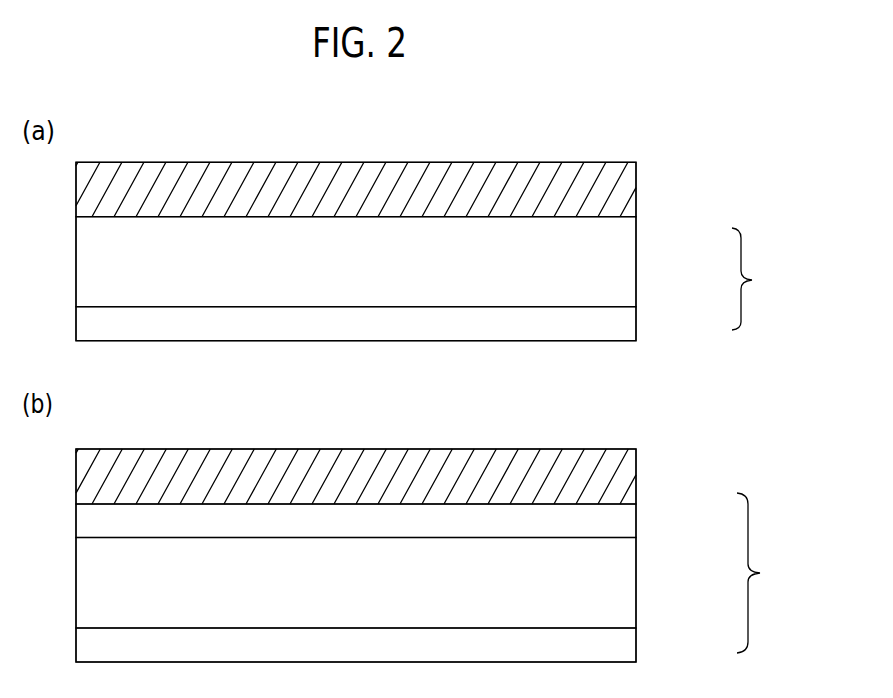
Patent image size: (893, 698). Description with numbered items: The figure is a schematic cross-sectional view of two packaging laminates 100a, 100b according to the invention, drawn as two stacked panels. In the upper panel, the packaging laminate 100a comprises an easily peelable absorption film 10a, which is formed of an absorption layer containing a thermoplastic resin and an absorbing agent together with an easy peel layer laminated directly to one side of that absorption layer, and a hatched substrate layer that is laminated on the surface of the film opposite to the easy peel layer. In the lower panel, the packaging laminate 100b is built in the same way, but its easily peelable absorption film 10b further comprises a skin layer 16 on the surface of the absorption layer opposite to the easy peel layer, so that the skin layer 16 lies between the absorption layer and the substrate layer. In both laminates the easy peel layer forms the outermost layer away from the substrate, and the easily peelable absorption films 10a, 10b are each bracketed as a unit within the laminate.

The packaging laminate 100a is at (382, 128).
The packaging laminate 100b is at (382, 425).
The skin layer 16 is at (612, 527).
The easily peelable absorption film 10a is at (763, 279).
The easily peelable absorption film 10b is at (769, 573).